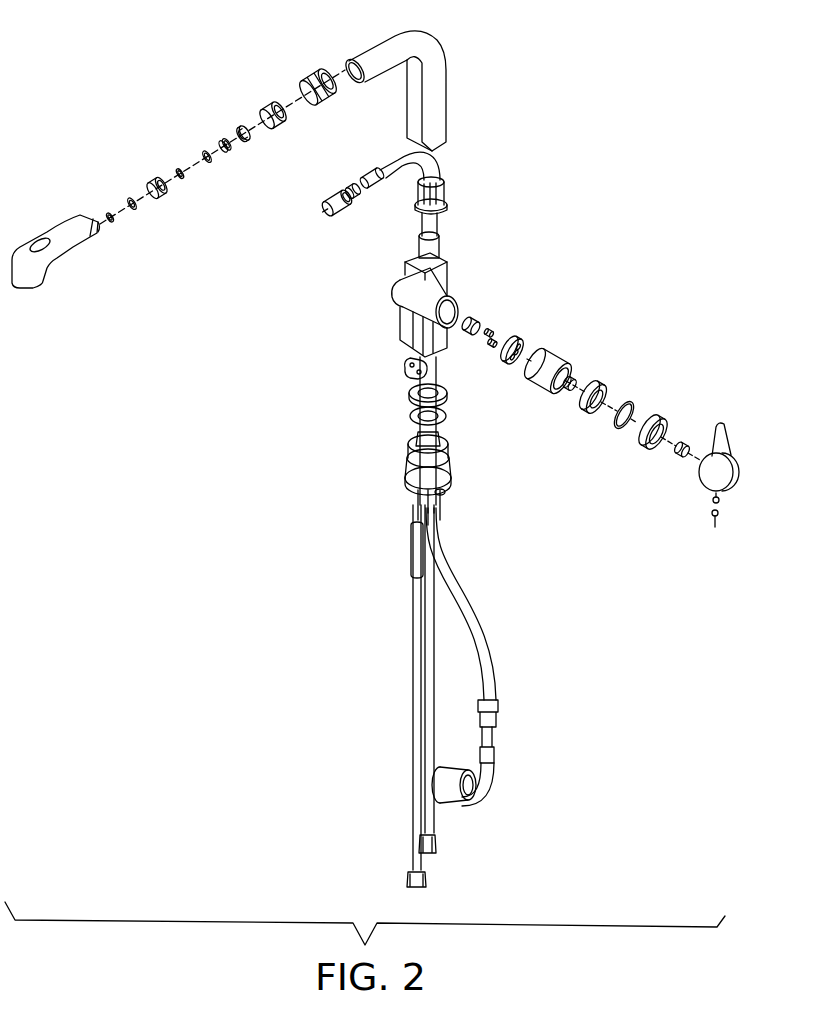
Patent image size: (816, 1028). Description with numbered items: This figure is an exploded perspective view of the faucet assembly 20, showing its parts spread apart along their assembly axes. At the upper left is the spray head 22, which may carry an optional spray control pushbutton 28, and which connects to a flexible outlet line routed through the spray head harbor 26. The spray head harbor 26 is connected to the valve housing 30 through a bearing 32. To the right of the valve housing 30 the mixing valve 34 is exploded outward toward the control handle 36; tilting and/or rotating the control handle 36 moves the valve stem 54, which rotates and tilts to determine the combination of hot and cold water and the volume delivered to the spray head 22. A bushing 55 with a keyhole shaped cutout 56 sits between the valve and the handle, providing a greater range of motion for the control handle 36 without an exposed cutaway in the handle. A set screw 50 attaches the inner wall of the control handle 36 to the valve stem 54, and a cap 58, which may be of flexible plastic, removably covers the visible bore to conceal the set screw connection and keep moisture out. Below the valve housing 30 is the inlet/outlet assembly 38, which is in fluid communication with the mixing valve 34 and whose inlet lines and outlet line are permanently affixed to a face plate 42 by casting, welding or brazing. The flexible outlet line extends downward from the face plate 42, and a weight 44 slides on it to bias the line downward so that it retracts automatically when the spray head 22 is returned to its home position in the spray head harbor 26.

The faucet assembly 20 is at (649, 146).
The spray head 22 is at (78, 243).
The spray head harbor 26 is at (427, 36).
The spray control pushbutton 28 is at (30, 249).
The valve housing 30 is at (407, 298).
The bearing 32 is at (400, 232).
The mixing valve 34 is at (537, 377).
The control handle 36 is at (726, 458).
The inlet/outlet assembly 38 is at (384, 678).
The face plate 42 is at (407, 372).
The weight 44 is at (443, 797).
The set screw 50 is at (710, 501).
The valve stem 54 is at (570, 373).
The bushing 55 is at (660, 417).
The keyhole shaped cutout 56 is at (653, 450).
The cap 58 is at (713, 518).